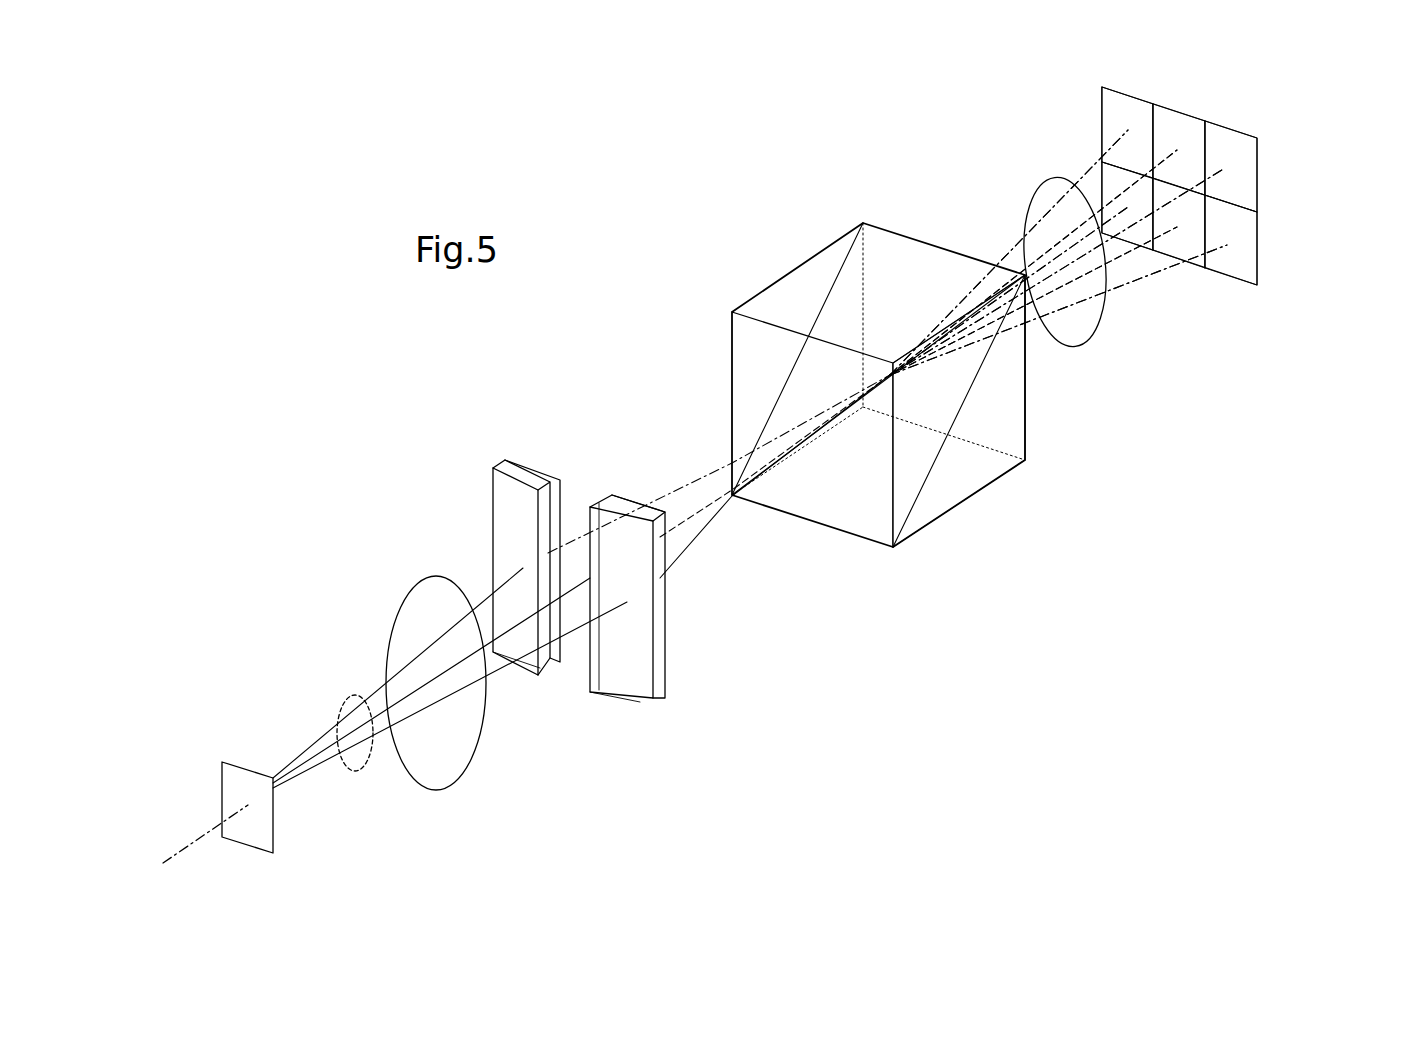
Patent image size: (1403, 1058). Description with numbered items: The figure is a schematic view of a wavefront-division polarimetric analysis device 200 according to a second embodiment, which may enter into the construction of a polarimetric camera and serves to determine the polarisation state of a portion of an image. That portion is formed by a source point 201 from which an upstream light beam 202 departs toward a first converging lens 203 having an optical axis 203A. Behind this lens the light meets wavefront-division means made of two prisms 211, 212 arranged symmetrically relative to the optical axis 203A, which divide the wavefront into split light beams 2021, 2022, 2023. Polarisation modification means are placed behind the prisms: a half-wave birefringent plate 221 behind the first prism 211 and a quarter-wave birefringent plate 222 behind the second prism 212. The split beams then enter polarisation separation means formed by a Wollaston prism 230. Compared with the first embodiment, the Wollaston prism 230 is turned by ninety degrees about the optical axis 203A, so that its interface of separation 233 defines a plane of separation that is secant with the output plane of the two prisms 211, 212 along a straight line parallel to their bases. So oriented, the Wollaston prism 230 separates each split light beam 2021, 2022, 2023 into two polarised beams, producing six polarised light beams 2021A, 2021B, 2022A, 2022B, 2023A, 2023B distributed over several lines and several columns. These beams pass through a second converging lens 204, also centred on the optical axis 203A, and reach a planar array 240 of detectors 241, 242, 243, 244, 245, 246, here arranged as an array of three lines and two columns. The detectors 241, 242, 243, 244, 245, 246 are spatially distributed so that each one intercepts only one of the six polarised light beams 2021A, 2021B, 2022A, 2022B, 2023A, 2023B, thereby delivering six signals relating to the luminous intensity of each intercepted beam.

The polarimetric analysis device 200 is at (1163, 620).
The source point 201 is at (240, 795).
The upstream light beam 202 is at (368, 771).
The first converging lens 203 is at (440, 790).
The optical axis 203A is at (200, 837).
The second converging lens 204 is at (1088, 345).
The first prism 211 is at (492, 520).
The second prism 212 is at (610, 697).
The half-wave birefringent plate 221 is at (520, 465).
The quarter-wave birefringent plate 222 is at (670, 648).
The Wollaston prism 230 is at (802, 262).
The interface of separation 233 is at (933, 482).
The planar array of detectors 240 is at (1258, 240).
The detector 241 is at (1243, 250).
The detector 242 is at (1245, 152).
The detector 243 is at (1110, 175).
The detector 244 is at (1107, 110).
The detector 245 is at (1208, 222).
The detector 246 is at (1163, 106).
The split light beam 2021 is at (672, 490).
The polarised light beam 2021A is at (1223, 242).
The polarised light beam 2021B is at (1223, 170).
The split light beam 2022 is at (717, 523).
The polarised light beam 2022A is at (1120, 210).
The polarised light beam 2022B is at (1085, 170).
The split light beam 2023 is at (707, 498).
The polarised light beam 2023A is at (1168, 227).
The polarised light beam 2023B is at (1170, 152).